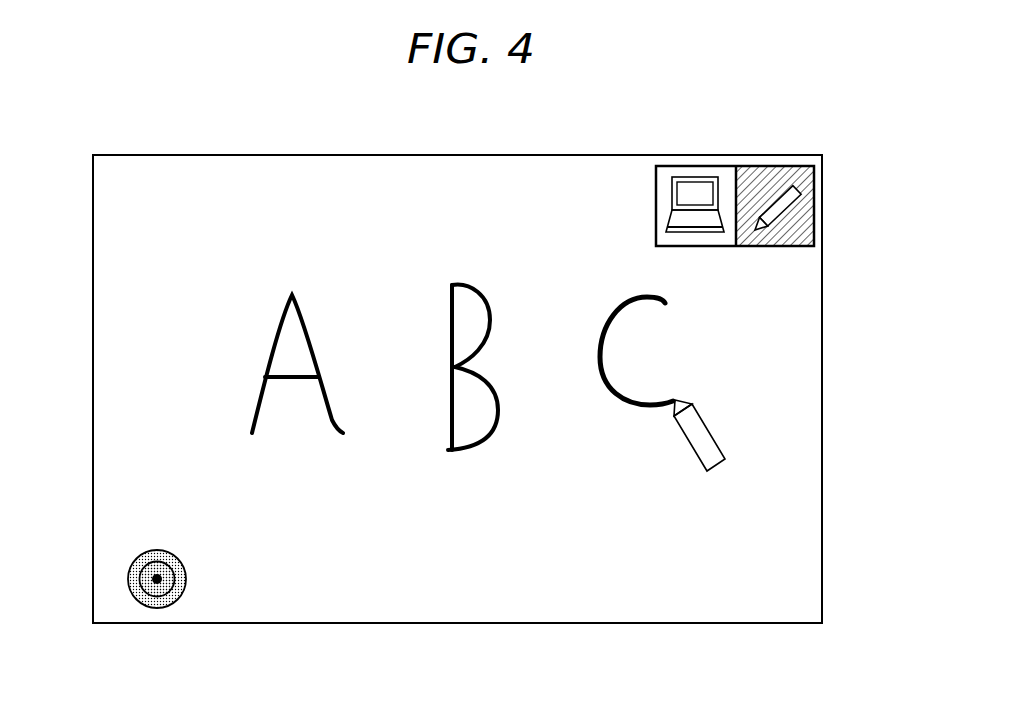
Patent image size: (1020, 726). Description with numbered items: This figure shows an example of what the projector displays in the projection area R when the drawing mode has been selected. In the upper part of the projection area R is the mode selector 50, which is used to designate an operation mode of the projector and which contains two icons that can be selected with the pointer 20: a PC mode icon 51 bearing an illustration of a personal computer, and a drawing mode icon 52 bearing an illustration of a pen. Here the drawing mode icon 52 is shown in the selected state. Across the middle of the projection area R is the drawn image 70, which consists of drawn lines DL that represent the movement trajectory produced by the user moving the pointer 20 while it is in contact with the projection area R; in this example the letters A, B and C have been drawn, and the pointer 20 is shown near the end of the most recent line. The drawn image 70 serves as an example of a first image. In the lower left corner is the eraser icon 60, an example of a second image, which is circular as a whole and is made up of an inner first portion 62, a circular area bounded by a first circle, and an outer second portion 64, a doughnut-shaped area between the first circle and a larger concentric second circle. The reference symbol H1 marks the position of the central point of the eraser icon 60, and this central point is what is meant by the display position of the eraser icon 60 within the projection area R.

The projection area R is at (90, 198).
The mode selector 50 is at (770, 180).
The PC mode icon 51 is at (695, 198).
The drawing mode icon 52 is at (787, 200).
The drawn image 70 is at (768, 357).
The drawn lines DL is at (665, 303).
The pointer 20 is at (697, 435).
The eraser icon 60 is at (165, 584).
The first portion 62 is at (171, 586).
The second portion 64 is at (137, 584).
The position of the central point of the eraser icon H1 is at (152, 567).